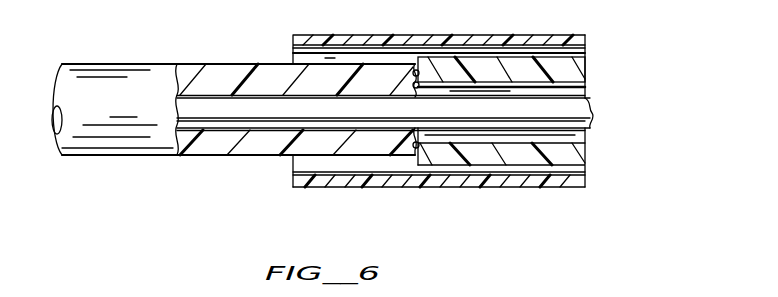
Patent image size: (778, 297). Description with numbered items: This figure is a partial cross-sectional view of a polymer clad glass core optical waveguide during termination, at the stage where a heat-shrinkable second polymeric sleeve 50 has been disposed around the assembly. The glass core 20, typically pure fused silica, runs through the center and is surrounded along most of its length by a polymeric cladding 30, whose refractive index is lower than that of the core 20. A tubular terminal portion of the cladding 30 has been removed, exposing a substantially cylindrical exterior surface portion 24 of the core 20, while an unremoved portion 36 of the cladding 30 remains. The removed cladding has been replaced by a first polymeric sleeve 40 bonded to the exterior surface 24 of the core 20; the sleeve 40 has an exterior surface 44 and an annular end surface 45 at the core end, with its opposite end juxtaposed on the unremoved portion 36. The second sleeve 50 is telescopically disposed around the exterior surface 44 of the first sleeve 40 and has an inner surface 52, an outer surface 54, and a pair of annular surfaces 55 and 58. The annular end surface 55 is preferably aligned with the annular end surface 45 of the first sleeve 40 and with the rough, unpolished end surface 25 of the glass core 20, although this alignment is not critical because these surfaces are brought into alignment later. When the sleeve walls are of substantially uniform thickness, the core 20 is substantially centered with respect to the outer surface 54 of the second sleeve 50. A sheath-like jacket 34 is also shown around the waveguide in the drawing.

The glass core 20 is at (210, 112).
The exterior surface portion 24 is at (577, 88).
The end surface 25 is at (591, 108).
The polymeric cladding 30 is at (220, 78).
The outer jacket 34 is at (270, 63).
The unremoved portion 36 is at (419, 146).
The first polymeric sleeve 40 is at (495, 153).
The exterior surface 44 is at (515, 57).
The annular end surface 45 is at (577, 144).
The second polymeric sleeve 50 is at (346, 181).
The inner surface 52 is at (582, 50).
The outer surface 54 is at (375, 40).
The annular end surface 55 is at (582, 182).
The annular surface 58 is at (293, 182).